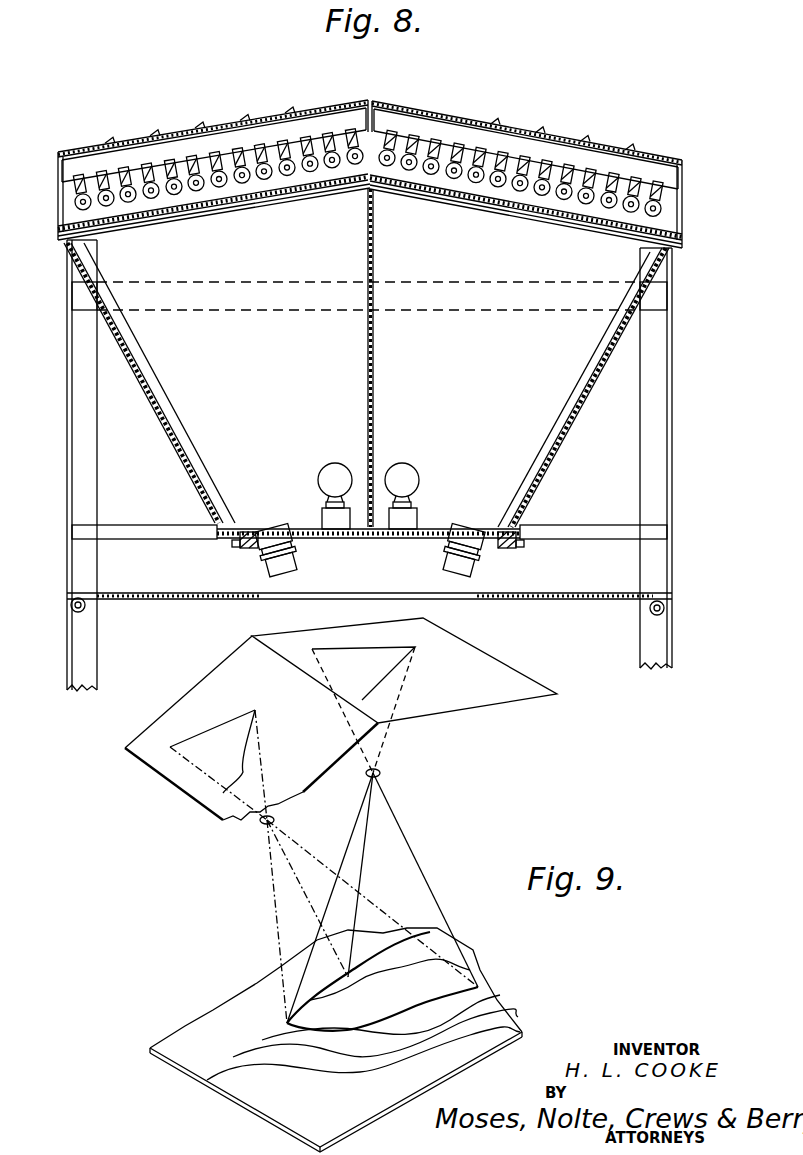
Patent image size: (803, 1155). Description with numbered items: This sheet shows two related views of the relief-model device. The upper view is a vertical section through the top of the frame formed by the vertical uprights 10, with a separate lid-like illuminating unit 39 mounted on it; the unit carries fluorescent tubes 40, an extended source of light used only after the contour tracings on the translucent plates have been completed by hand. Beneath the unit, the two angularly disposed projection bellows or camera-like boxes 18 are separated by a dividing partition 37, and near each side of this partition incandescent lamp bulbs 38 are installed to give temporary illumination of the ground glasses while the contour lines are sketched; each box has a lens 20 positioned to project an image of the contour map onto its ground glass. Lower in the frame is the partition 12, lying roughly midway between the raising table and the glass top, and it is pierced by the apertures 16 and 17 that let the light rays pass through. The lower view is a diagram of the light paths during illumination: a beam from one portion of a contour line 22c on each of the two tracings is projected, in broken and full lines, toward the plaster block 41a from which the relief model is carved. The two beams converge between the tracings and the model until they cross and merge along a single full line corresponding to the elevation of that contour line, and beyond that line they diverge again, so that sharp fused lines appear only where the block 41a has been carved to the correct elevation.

In FIG. 8, the vertical uprights 10 is at (67, 632).
In FIG. 8, the partition 12 is at (575, 598).
In FIG. 8, the aperture 16 is at (258, 596).
In FIG. 8, the aperture 17 is at (477, 598).
In FIG. 8, the projection bellows or camera-like box 18 is at (172, 418).
In FIG. 8, the lens 20 is at (432, 563).
In FIG. 9, the lens 20 is at (382, 773).
In FIG. 8, the dividing partition 37 is at (374, 360).
In FIG. 8, the lamps 38 is at (333, 465).
In FIG. 8, the illuminating unit 39 is at (90, 147).
In FIG. 8, the fluorescent tubes 40 is at (194, 162).
In FIG. 9, the contour line 22c is at (415, 647).
In FIG. 9, the plaster block 41a is at (497, 1044).